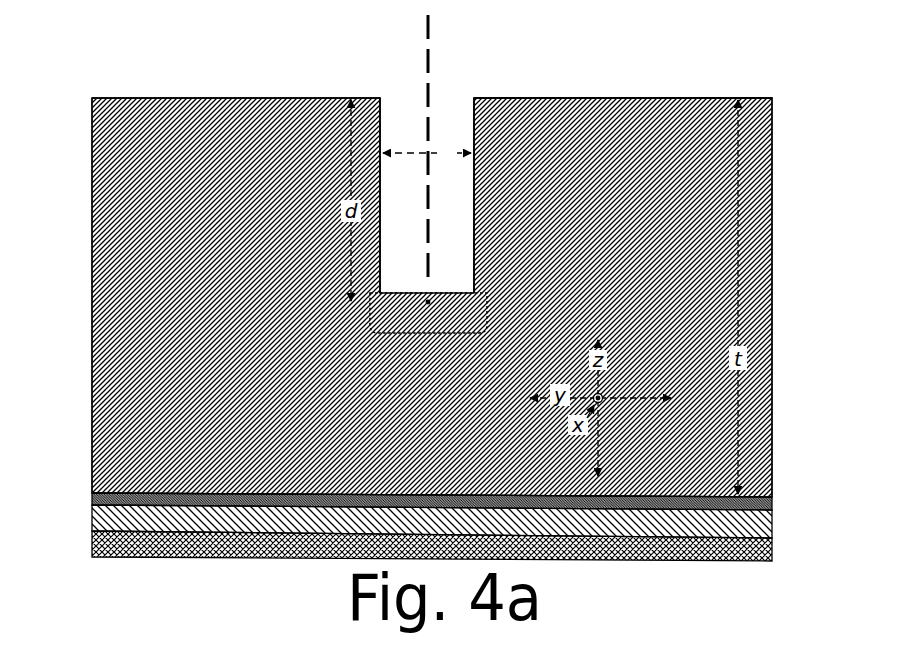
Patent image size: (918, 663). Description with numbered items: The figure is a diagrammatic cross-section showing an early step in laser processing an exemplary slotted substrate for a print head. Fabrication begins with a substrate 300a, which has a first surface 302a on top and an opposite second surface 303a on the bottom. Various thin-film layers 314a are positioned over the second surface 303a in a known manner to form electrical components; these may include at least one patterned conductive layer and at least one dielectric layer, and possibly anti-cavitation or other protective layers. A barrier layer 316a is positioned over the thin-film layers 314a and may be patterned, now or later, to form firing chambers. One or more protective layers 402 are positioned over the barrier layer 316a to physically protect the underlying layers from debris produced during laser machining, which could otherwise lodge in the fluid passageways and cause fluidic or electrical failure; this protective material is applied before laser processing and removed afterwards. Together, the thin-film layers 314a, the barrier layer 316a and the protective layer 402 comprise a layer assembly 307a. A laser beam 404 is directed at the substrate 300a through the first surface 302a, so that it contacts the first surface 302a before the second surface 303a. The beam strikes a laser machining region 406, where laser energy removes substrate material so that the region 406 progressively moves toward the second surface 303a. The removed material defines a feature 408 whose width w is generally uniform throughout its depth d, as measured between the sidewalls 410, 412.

The substrate 300a is at (432, 297).
The first surface 302a is at (657, 98).
The second surface 303a is at (573, 499).
The laser beam 404 is at (428, 159).
The laser machining region 406 is at (486, 302).
The feature 408 is at (428, 140).
The sidewall 410 is at (380, 216).
The sidewall 412 is at (474, 249).
The thin-film layers 314a is at (92, 496).
The barrier layer 316a is at (92, 520).
The protective layer 402 is at (92, 543).
The layer assembly 307a is at (441, 520).